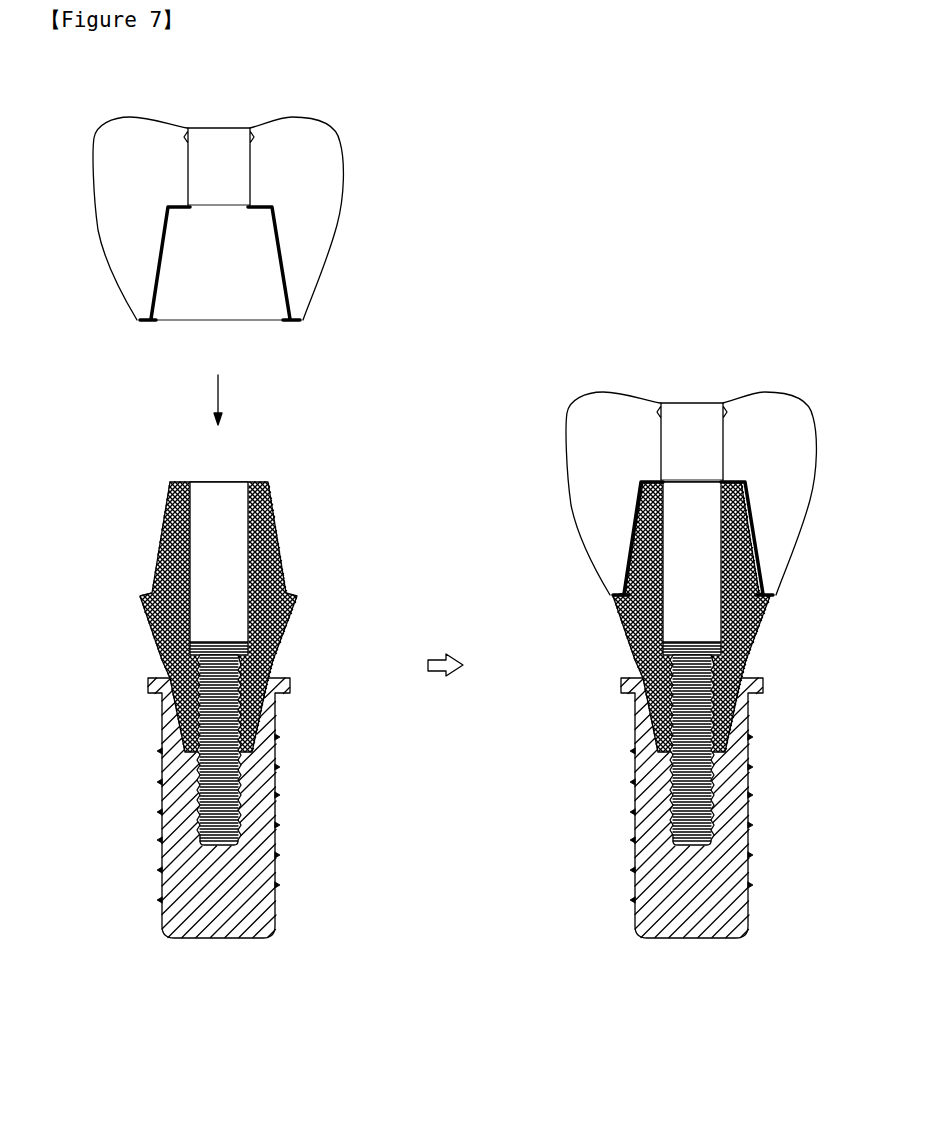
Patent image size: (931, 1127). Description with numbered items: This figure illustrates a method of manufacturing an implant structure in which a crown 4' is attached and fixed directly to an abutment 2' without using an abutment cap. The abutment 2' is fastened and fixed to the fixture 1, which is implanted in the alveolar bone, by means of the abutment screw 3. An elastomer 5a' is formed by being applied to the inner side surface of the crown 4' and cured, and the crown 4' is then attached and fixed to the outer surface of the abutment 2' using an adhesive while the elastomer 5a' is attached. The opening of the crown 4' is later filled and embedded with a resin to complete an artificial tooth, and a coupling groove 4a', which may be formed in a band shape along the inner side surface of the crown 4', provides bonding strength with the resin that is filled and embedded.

The fixture 1 is at (277, 754).
The abutment 2' is at (423, 600).
The abutment screw 3 is at (239, 718).
The crown 4' is at (475, 356).
The coupling groove 4a' is at (455, 269).
The elastomer 5a' is at (484, 408).